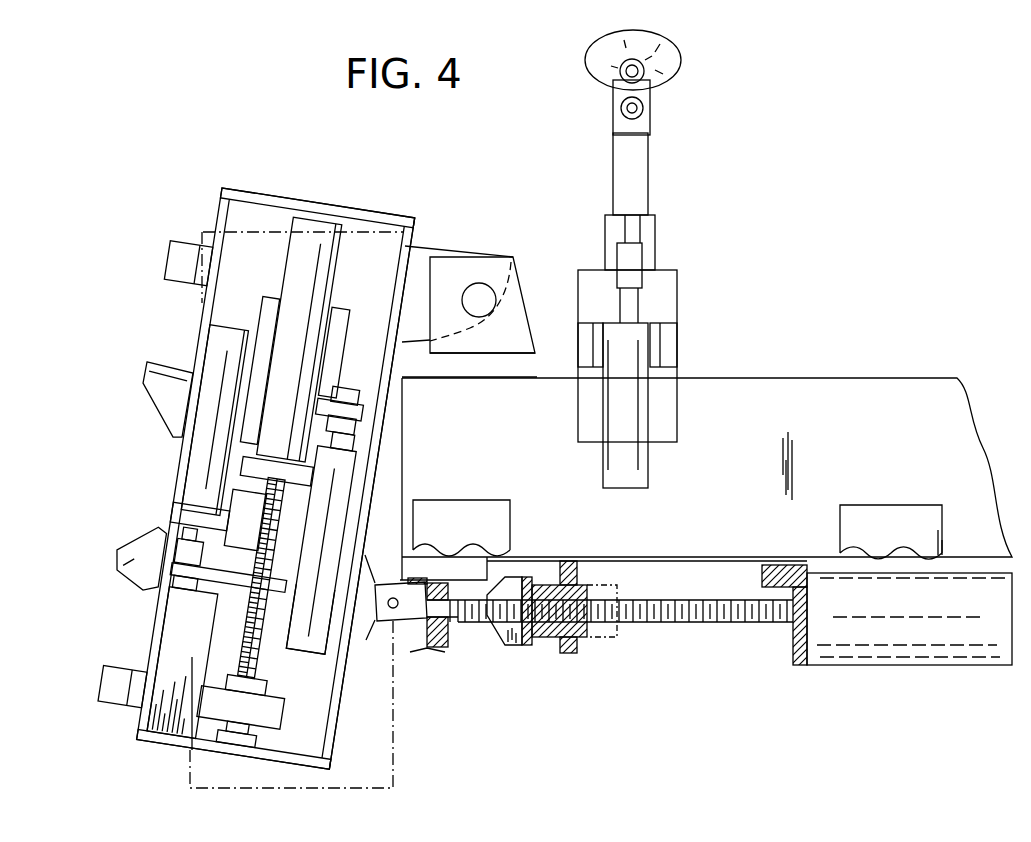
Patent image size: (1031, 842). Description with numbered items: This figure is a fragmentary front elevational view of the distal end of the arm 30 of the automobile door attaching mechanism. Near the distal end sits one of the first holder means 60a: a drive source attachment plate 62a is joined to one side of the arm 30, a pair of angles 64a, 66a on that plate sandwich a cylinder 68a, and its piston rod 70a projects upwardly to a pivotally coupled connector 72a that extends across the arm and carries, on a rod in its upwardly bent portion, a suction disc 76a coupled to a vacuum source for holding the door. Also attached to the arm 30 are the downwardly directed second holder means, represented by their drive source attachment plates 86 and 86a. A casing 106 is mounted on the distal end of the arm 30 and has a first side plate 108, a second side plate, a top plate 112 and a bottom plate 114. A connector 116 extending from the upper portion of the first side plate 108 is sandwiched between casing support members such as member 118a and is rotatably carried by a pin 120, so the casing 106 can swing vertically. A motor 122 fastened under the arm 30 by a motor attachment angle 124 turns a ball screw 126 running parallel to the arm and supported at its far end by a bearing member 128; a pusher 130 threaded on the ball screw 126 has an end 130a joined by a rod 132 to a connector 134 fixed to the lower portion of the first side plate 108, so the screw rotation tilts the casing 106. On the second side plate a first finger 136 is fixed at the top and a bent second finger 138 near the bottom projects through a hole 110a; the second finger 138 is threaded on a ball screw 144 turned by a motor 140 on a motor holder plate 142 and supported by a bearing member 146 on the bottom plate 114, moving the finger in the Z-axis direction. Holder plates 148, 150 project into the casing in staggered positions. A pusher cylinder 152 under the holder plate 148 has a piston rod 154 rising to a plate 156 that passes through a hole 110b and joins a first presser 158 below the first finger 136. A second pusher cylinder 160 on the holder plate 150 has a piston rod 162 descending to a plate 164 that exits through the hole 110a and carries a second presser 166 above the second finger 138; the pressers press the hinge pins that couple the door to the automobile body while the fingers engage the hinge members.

The arm 30 is at (885, 413).
The first holder means 60a is at (692, 259).
The drive source attachment plate 62a is at (660, 412).
The angle 64a is at (670, 350).
The angle 66a is at (583, 337).
The cylinder 68a is at (625, 465).
The piston rod 70a is at (630, 305).
The connector 72a is at (633, 175).
The suction disc 76a is at (663, 45).
The drive source attachment plate 86 is at (893, 523).
The drive source attachment plate 86a is at (503, 522).
The casing 106 is at (352, 182).
The first side plate 108 is at (373, 480).
The hole 110a is at (217, 662).
The hole 110b is at (270, 313).
The top plate 112 is at (283, 202).
The bottom plate 114 is at (237, 757).
The connector 116 is at (427, 247).
The casing support member 118a is at (503, 267).
The pin 120 is at (483, 297).
The motor 122 is at (913, 637).
The motor attachment angle 124 is at (793, 662).
The ball screw 126 is at (700, 630).
The bearing member 128 is at (443, 650).
The pusher 130 is at (548, 640).
The end of pusher 130a is at (503, 637).
The rod 132 is at (411, 615).
The connector 134 is at (366, 640).
The first finger 136 is at (188, 256).
The second finger 138 is at (120, 697).
The motor 140 is at (322, 255).
The motor holder plate 142 is at (248, 467).
The ball screw 144 is at (248, 640).
The bearing member 146 is at (253, 740).
The holder plate 148 is at (357, 453).
The holder plate 150 is at (182, 518).
The pusher cylinder 152 is at (307, 643).
The piston rod 154 is at (347, 438).
The plate 156 is at (365, 410).
The first presser 158 is at (163, 383).
The pusher cylinder 160 is at (217, 355).
The piston rod 162 is at (187, 533).
The plate 164 is at (212, 575).
The second presser 166 is at (133, 563).